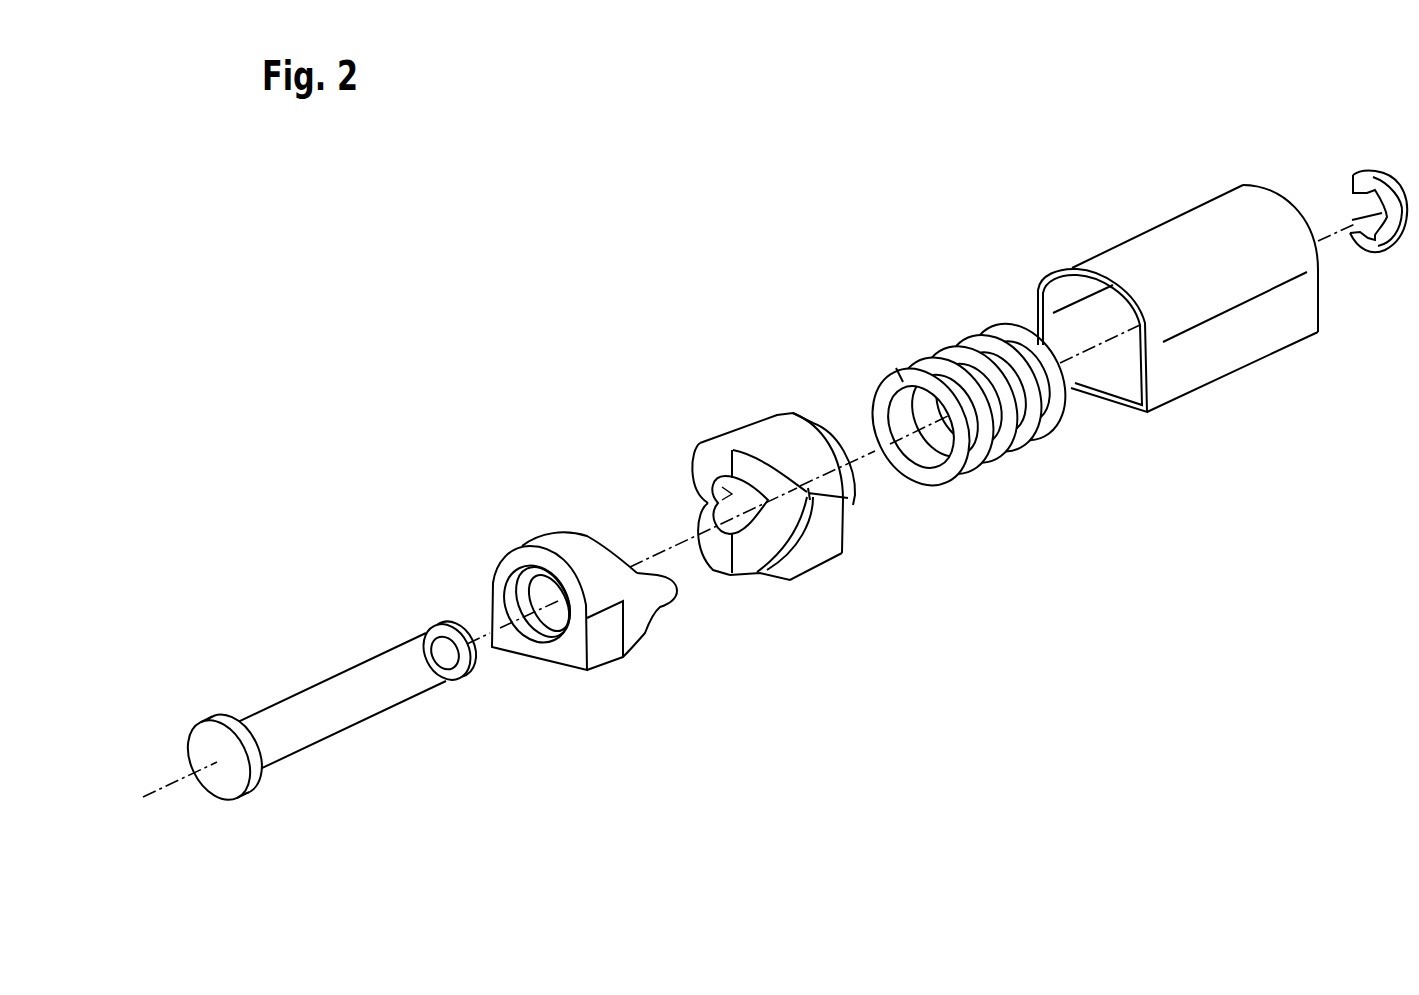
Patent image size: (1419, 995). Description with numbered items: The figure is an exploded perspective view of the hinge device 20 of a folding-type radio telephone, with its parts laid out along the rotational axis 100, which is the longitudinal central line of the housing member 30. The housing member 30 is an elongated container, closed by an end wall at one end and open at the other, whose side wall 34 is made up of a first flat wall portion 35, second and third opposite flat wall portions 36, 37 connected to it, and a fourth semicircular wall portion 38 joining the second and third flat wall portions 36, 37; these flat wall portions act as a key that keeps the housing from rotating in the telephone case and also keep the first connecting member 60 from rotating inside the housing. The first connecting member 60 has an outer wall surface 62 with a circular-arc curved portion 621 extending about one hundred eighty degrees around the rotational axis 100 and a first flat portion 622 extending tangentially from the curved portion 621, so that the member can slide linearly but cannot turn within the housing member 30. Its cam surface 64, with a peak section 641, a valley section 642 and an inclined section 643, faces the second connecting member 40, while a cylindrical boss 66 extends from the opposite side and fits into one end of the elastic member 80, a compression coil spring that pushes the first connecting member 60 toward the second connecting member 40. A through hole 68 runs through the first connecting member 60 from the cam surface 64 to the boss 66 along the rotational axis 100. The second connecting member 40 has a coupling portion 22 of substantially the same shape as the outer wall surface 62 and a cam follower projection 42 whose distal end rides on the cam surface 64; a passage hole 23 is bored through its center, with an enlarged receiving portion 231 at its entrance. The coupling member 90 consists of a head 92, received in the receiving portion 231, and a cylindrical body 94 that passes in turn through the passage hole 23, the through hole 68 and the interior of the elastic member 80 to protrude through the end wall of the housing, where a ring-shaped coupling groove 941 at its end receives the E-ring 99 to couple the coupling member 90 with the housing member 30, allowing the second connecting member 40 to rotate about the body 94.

The hinge device 20 is at (486, 267).
The coupling portion 22 is at (560, 545).
The passage hole 23 is at (557, 607).
The receiving portion 231 is at (523, 582).
The housing member 30 is at (1125, 182).
The side wall 34 is at (1276, 328).
The first flat wall portion 35 is at (1120, 382).
The second flat wall portion 36 is at (1215, 358).
The third flat wall portion 37 is at (1040, 314).
The fourth semicircular wall portion 38 is at (1172, 236).
The second connecting member 40 is at (473, 501).
The cam follower projection 42 is at (657, 597).
The first connecting member 60 is at (701, 369).
The outer wall surface 62 is at (770, 429).
The circular-arc curved portion 621 is at (789, 433).
The first flat portion 622 is at (828, 537).
The cam surface 64 is at (710, 465).
The peak section 641 is at (726, 550).
The valley section 642 is at (848, 498).
The inclined section 643 is at (757, 547).
The cylindrical boss 66 is at (843, 437).
The through hole 68 is at (706, 495).
The elastic member 80 is at (907, 304).
The coupling member 90 is at (280, 652).
The head 92 is at (205, 747).
The cylindrical body 94 is at (330, 725).
The coupling groove 941 is at (463, 673).
The E-ring 99 is at (1353, 147).
The rotational axis 100 is at (163, 790).